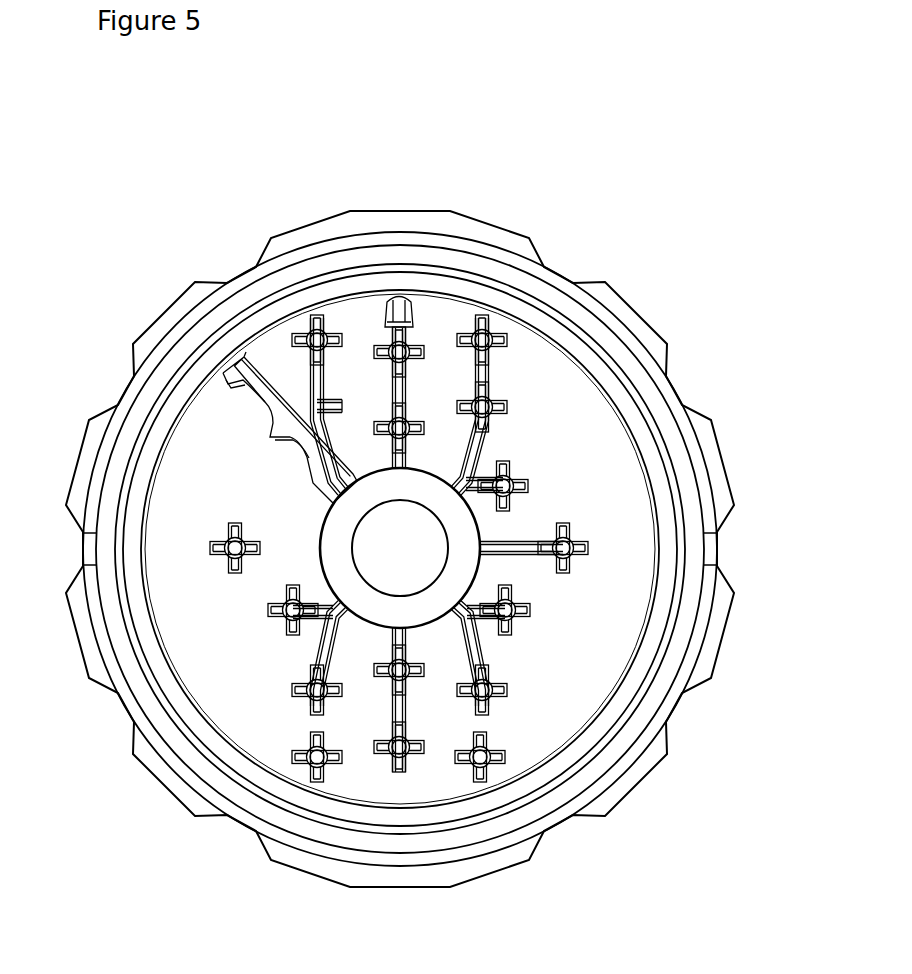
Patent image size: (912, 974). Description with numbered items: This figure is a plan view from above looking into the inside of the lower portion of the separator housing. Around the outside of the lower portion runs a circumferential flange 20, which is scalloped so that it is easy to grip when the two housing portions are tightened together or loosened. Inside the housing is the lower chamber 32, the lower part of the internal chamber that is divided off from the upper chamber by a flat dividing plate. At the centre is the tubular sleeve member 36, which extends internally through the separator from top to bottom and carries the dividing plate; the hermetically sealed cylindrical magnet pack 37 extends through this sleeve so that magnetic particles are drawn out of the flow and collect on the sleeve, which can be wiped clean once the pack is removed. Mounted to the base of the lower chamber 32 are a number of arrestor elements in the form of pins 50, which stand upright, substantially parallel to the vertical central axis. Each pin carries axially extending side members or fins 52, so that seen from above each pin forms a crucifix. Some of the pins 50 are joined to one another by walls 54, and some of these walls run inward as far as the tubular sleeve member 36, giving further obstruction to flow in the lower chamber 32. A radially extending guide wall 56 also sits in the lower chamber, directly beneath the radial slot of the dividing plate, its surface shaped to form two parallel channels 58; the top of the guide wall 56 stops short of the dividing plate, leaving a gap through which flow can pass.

The circumferential flange 20 is at (632, 321).
The lower chamber 32 is at (212, 684).
The tubular sleeve member 36 is at (460, 521).
The magnet pack 37 is at (400, 548).
The pins 50 is at (512, 610).
The fins 52 is at (499, 738).
The walls 54 is at (491, 443).
The guide wall 56 is at (261, 367).
The channels 58 is at (297, 458).